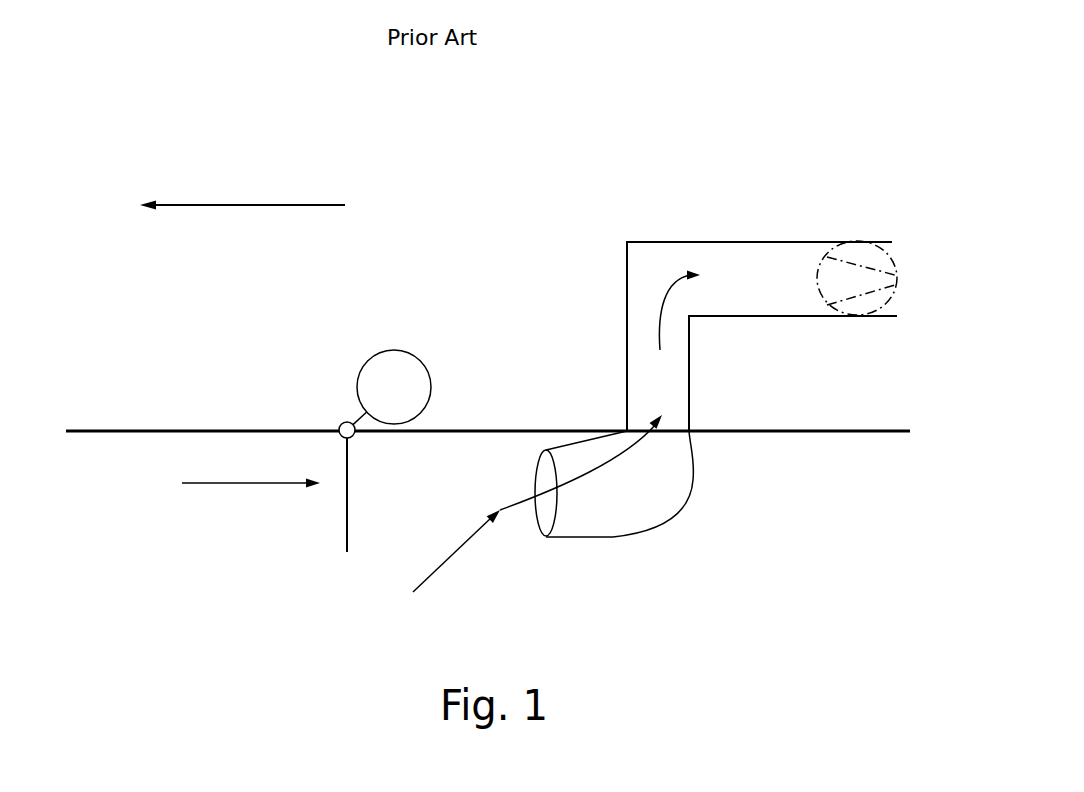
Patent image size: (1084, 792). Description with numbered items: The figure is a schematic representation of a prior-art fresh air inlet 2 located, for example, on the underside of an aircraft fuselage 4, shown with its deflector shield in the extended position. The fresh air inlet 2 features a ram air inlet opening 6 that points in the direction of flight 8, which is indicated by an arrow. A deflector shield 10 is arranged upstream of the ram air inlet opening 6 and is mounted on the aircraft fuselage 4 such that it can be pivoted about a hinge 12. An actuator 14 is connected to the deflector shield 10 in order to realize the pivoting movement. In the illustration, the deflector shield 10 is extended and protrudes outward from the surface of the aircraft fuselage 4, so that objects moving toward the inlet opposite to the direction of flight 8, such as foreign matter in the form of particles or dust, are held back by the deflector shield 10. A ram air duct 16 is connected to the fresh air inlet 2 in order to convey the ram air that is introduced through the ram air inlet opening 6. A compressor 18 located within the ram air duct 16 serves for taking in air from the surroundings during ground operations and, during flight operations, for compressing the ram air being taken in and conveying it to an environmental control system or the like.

The fresh air inlet 2 is at (670, 498).
The aircraft fuselage 4 is at (797, 433).
The ram air inlet opening 6 is at (543, 517).
The direction of flight 8 is at (330, 203).
The deflector shield 10 is at (345, 532).
The hinge 12 is at (347, 422).
The actuator 14 is at (417, 370).
The ram air duct 16 is at (728, 250).
The compressor 18 is at (860, 250).